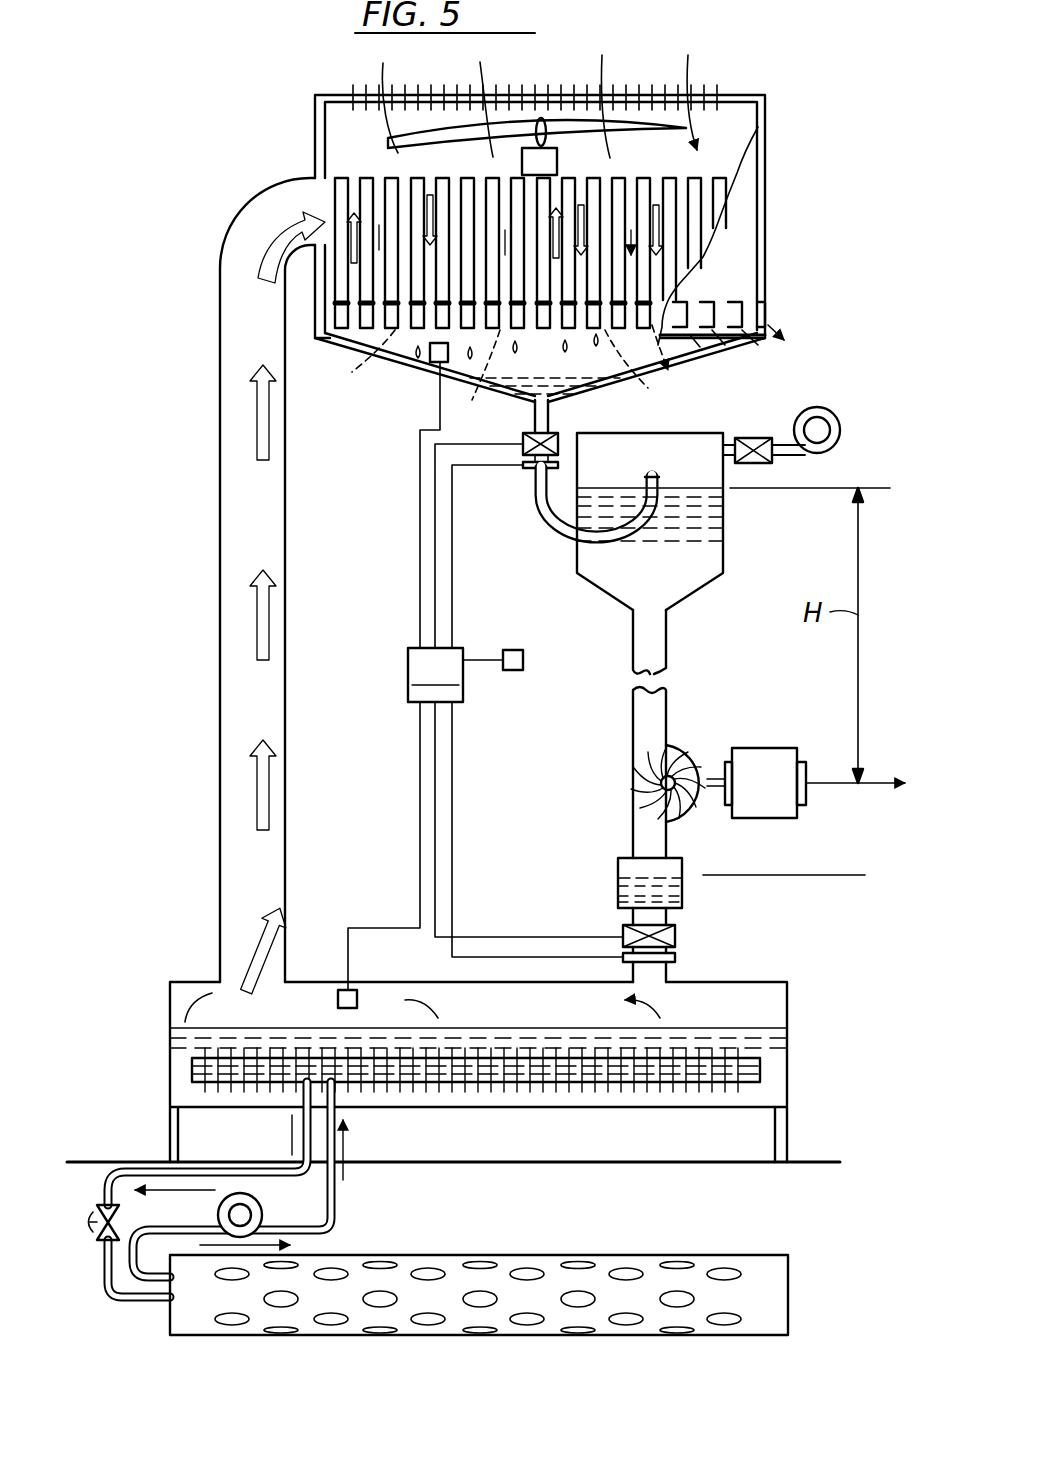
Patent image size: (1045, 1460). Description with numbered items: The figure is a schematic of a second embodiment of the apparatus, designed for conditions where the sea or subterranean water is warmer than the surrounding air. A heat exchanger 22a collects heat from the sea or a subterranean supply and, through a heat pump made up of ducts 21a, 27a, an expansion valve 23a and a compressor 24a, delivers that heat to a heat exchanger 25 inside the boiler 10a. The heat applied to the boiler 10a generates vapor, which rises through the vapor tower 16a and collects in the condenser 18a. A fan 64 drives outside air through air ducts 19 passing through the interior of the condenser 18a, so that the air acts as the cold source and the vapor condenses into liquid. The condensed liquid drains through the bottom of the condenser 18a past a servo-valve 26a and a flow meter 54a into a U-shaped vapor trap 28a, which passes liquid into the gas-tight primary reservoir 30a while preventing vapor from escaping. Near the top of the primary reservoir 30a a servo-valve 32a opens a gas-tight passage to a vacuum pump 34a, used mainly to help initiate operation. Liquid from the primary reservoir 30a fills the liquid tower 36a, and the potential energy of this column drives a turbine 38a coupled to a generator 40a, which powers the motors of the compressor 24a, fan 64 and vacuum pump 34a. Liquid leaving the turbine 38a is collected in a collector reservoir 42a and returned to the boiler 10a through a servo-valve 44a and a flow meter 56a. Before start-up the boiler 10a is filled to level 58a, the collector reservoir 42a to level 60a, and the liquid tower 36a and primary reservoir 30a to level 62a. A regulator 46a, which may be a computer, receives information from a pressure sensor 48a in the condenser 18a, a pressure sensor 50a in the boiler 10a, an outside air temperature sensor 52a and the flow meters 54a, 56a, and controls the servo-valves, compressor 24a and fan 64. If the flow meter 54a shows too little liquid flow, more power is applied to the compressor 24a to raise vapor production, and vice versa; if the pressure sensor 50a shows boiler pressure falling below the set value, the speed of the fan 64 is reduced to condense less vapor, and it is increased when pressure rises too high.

The boiler 10a is at (787, 1062).
The vapor tower 16a is at (220, 483).
The condenser 18a is at (770, 228).
The air ducts 19 is at (365, 192).
The duct 21a is at (335, 1230).
The heat exchanger 22a is at (597, 1255).
The expansion valve 23a is at (105, 1205).
The compressor 24a is at (262, 1215).
The heat exchanger 25 is at (585, 1085).
The servo-valve 26a is at (558, 445).
The duct 27a is at (240, 1172).
The vapor trap 28a is at (590, 548).
The primary reservoir 30a is at (723, 553).
The servo-valve 32a is at (745, 438).
The vacuum pump 34a is at (812, 408).
The liquid tower 36a is at (668, 640).
The turbine 38a is at (633, 772).
The generator 40a is at (785, 748).
The collector reservoir 42a is at (618, 873).
The servo-valve 44a is at (623, 935).
The regulator 46a is at (485, 717).
The pressure sensor 48a is at (432, 362).
The pressure sensor 50a is at (348, 950).
The outside air temperature sensor 52a is at (516, 650).
The flow meter 54a is at (530, 495).
The flow meter 56a is at (675, 960).
The level 58a is at (560, 1022).
The level 60a is at (795, 875).
The level 62a is at (838, 488).
The fan 64 is at (668, 140).